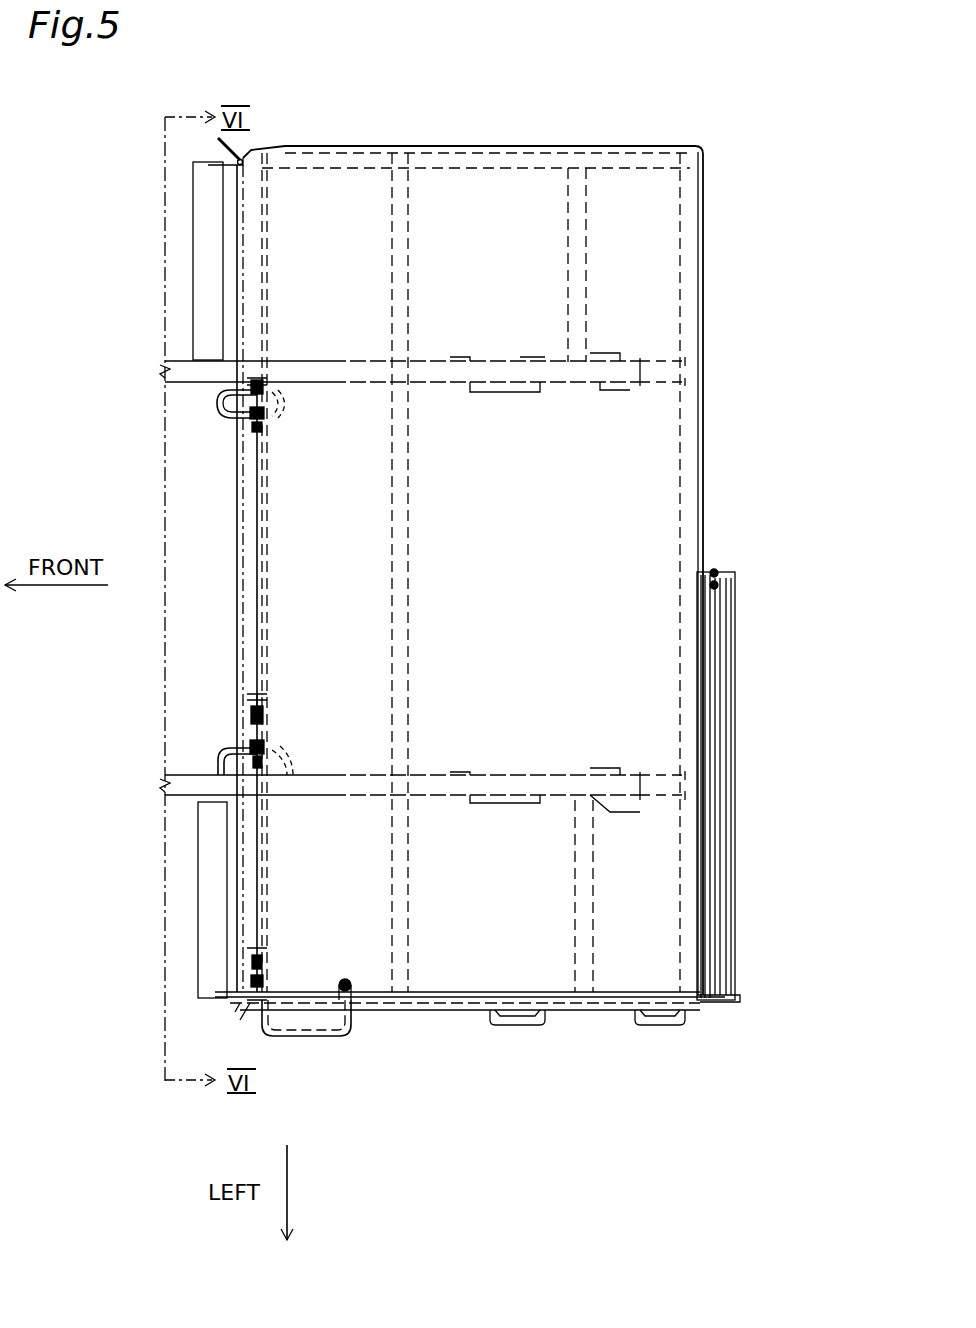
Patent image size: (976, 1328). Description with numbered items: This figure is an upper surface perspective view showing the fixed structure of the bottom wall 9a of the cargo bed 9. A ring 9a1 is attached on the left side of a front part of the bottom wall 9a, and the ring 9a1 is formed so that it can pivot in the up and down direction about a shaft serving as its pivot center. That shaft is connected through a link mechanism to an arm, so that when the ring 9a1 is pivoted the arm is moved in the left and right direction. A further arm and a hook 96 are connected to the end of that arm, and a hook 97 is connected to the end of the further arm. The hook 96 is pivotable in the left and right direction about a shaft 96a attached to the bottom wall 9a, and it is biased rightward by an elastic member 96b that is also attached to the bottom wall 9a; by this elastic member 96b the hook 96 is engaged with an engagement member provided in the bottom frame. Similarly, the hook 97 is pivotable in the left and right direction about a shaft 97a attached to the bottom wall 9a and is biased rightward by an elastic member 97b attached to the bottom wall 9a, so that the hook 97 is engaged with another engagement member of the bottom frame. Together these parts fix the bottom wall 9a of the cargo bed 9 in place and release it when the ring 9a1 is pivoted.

The cargo bed 9 is at (712, 126).
The bottom wall 9a is at (710, 238).
The ring 9a1 is at (333, 1038).
The hook 96 is at (257, 770).
The shaft 96a is at (257, 752).
The elastic member 96b is at (257, 720).
The hook 97 is at (257, 432).
The shaft 97a is at (257, 414).
The elastic member 97b is at (257, 388).